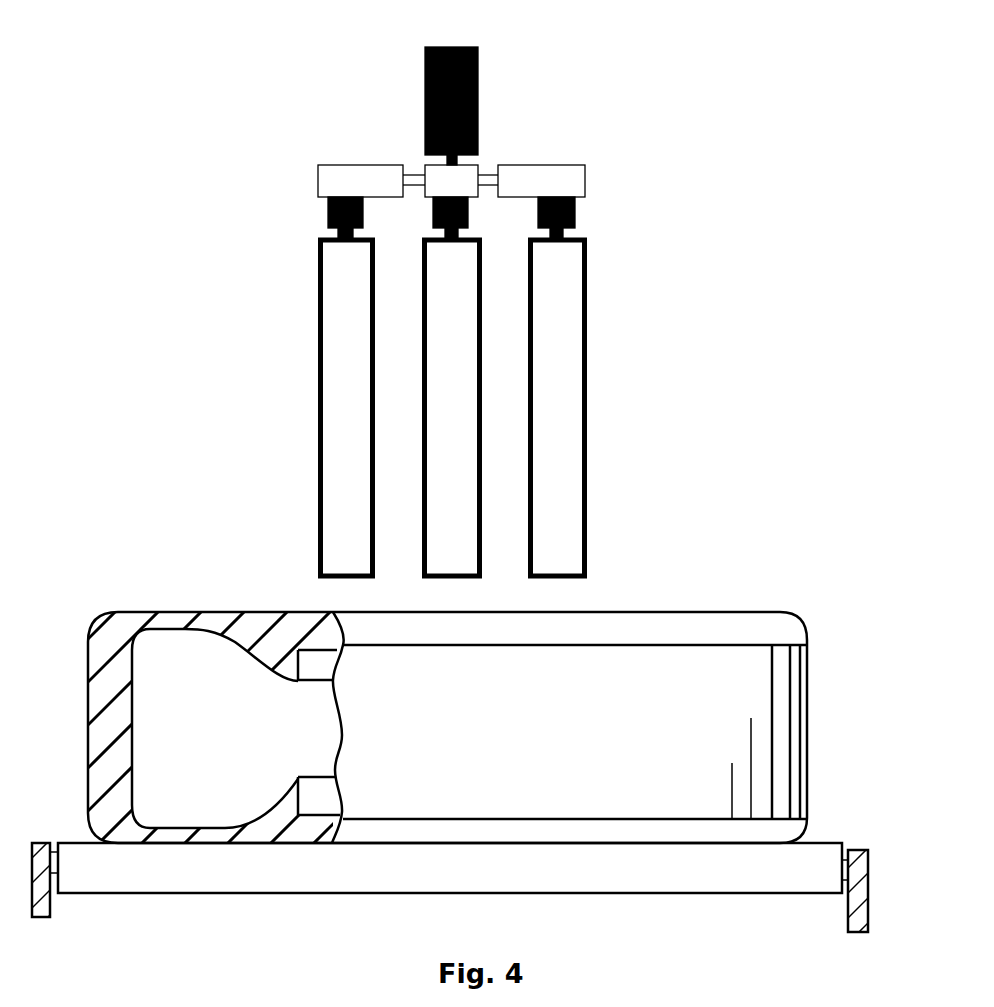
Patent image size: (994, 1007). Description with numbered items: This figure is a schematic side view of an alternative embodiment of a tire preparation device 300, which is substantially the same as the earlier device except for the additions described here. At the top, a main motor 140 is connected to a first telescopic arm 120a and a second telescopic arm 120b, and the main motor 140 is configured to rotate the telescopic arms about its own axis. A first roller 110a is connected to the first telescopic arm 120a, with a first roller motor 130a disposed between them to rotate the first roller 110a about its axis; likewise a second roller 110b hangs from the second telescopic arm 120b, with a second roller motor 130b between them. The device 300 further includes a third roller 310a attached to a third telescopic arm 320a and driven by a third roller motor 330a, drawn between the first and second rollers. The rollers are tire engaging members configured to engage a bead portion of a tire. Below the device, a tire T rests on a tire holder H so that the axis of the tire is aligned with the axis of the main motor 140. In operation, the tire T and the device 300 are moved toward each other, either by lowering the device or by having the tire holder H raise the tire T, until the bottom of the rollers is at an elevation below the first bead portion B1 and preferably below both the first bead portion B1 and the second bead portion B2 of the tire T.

The tire preparation device 300 is at (196, 84).
The main motor 140 is at (478, 100).
The first telescopic arm 120a is at (398, 166).
The second telescopic arm 120b is at (490, 172).
The third telescopic arm 320a is at (435, 175).
The first roller motor 130a is at (328, 213).
The second roller motor 130b is at (575, 210).
The third roller motor 330a is at (433, 215).
The first roller 110a is at (316, 407).
The second roller 110b is at (588, 407).
The third roller 310a is at (575, 408).
The tire T is at (758, 580).
The first bead portion B1 is at (277, 663).
The second bead portion B2 is at (293, 800).
The tire holder H is at (833, 832).